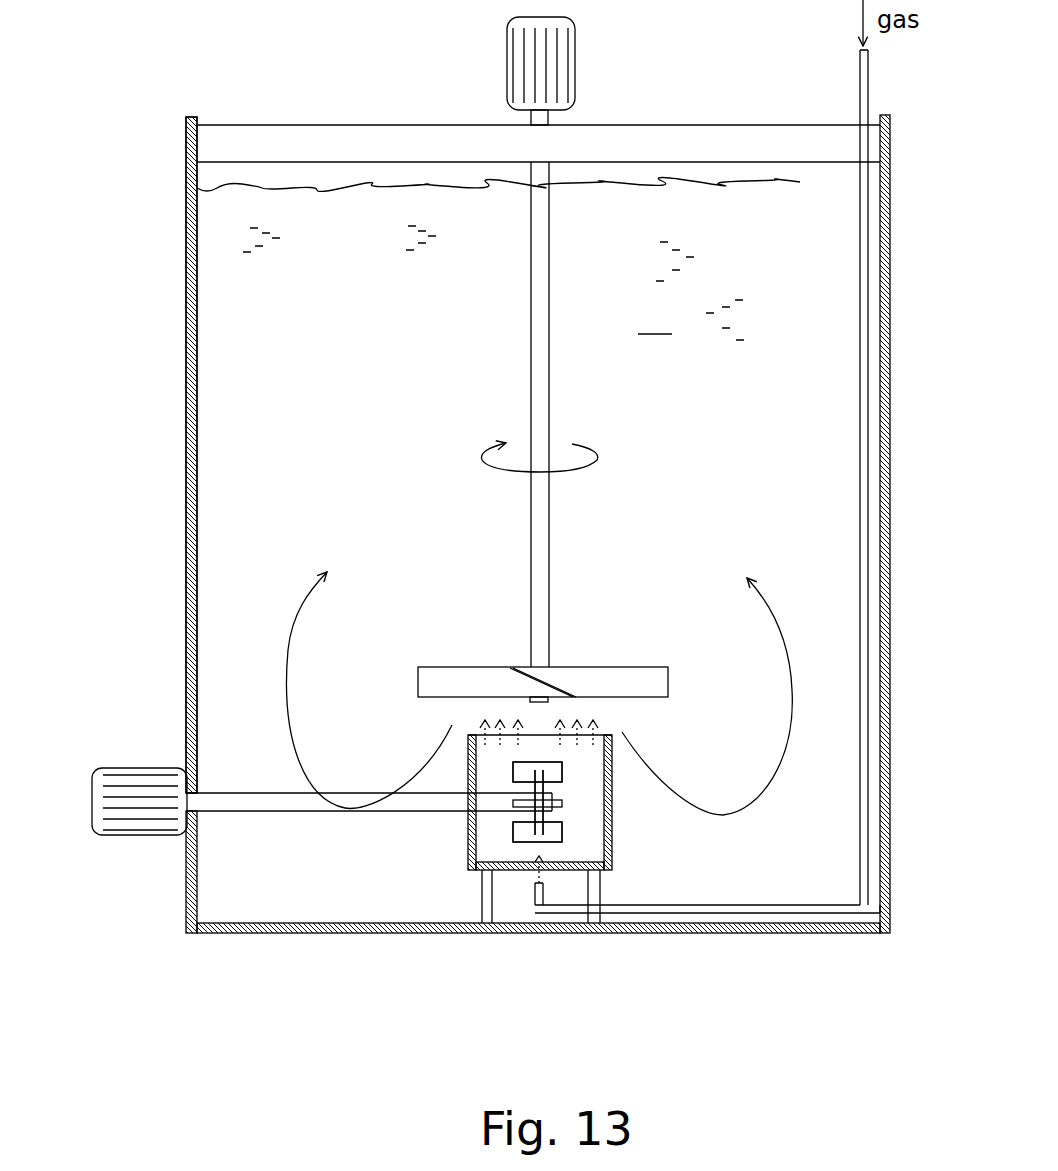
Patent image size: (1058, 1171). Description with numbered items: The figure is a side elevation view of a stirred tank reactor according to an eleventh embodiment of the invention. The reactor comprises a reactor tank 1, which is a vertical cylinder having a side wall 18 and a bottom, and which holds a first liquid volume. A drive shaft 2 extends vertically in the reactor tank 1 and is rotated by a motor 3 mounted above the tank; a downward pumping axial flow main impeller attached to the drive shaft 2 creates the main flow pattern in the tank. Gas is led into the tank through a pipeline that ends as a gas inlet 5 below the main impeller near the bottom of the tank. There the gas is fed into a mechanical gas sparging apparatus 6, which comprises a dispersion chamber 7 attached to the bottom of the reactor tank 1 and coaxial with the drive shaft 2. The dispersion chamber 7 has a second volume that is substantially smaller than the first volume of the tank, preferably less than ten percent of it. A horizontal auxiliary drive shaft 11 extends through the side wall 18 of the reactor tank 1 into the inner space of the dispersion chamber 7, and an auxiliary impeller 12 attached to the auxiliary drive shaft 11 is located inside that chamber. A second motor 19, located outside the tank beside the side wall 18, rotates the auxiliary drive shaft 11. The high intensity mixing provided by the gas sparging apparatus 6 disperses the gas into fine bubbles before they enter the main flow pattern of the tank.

The reactor tank 1 is at (186, 331).
The drive shaft 2 is at (540, 242).
The motor 3 is at (507, 45).
The gas inlet 5 is at (603, 673).
The gas sparging apparatus 6 is at (457, 832).
The dispersion chamber 7 is at (612, 825).
The auxiliary drive shaft 11 is at (280, 802).
The auxiliary impeller 12 is at (560, 775).
The side wall 18 is at (186, 643).
The second motor 19 is at (113, 782).